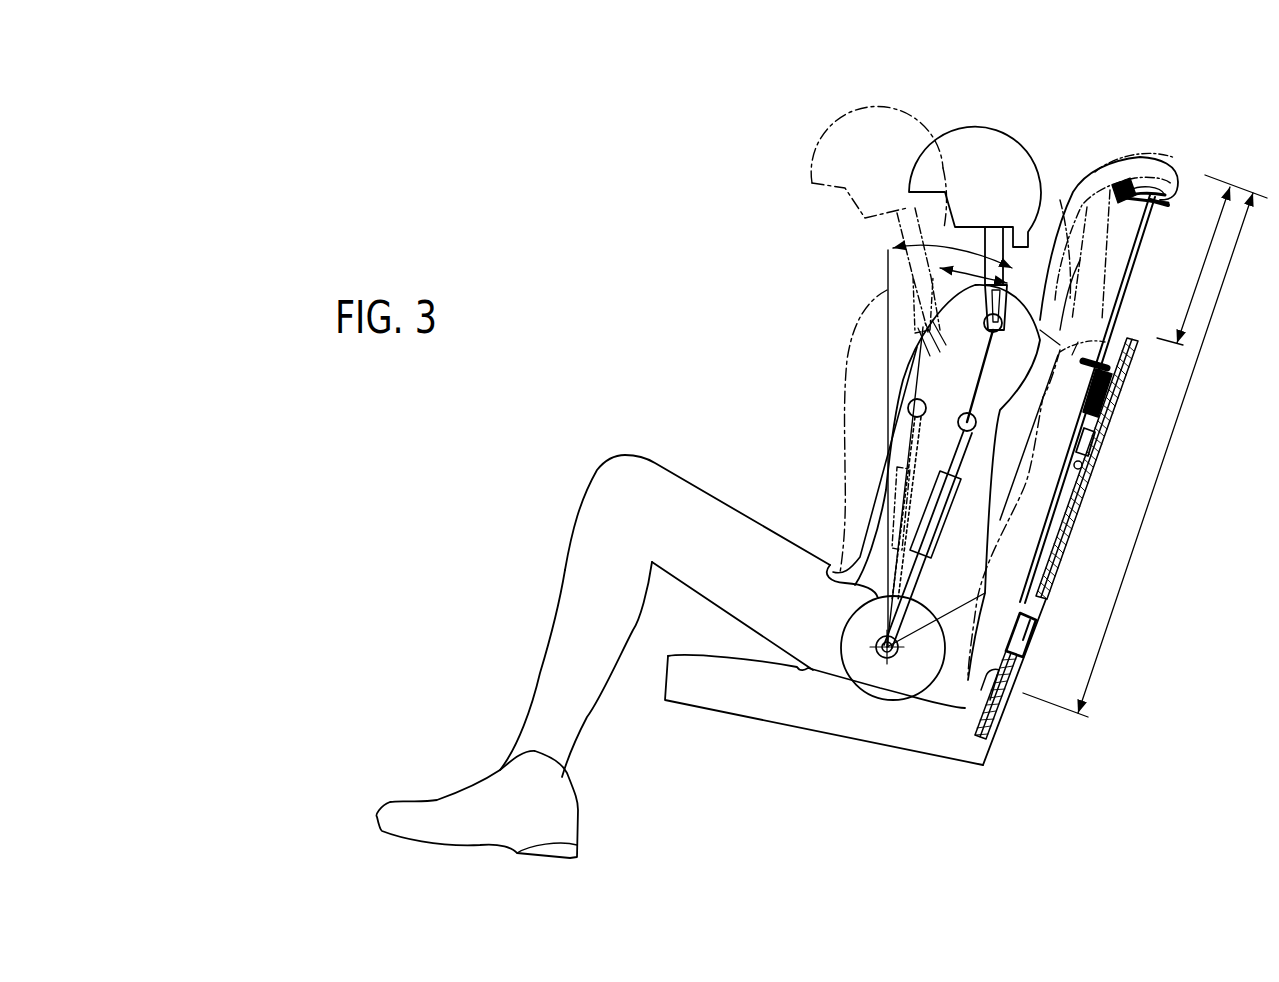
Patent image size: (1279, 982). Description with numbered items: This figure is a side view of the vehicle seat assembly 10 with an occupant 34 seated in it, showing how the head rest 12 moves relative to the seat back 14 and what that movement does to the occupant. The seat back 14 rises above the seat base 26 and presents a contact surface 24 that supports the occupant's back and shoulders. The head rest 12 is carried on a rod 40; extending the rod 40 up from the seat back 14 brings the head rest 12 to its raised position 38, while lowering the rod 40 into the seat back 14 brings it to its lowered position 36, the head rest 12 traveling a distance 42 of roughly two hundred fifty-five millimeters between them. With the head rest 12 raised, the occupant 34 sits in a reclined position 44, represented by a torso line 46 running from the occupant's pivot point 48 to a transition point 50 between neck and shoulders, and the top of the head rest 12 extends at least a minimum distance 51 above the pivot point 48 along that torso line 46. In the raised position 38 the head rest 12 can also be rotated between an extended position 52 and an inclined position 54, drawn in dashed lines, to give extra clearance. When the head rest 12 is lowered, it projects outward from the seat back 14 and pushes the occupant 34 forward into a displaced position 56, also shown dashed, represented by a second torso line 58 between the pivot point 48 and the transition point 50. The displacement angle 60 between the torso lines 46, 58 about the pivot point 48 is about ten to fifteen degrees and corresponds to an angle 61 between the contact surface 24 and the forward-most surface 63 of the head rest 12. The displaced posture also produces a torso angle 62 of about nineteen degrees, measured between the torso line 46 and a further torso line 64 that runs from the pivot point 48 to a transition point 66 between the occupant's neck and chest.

The vehicle seat assembly 10 is at (1138, 630).
The head rest 12 is at (1173, 170).
The seat back 14 is at (1080, 513).
The contact surface 24 is at (980, 590).
The seat base 26 is at (718, 698).
The occupant 34 is at (552, 630).
The lowered position 36 is at (1133, 320).
The raised position 38 is at (1167, 140).
The rod 40 is at (1120, 287).
The distance 42 is at (1212, 260).
The reclined position 44 is at (1012, 150).
The torso line 46 is at (907, 587).
The pivot point 48 is at (900, 652).
The transition point 50 is at (1013, 283).
The minimum distance 51 is at (1138, 455).
The extended position 52 is at (1090, 188).
The inclined position 54 is at (1068, 222).
The displaced position 56 is at (853, 123).
The torso line 58 is at (890, 557).
The displacement angle 60 is at (980, 262).
The angle 61 is at (990, 540).
The torso angle 62 is at (955, 250).
The forward-most surface 63 is at (953, 453).
The torso line 64 is at (885, 480).
The transition point 66 is at (887, 290).